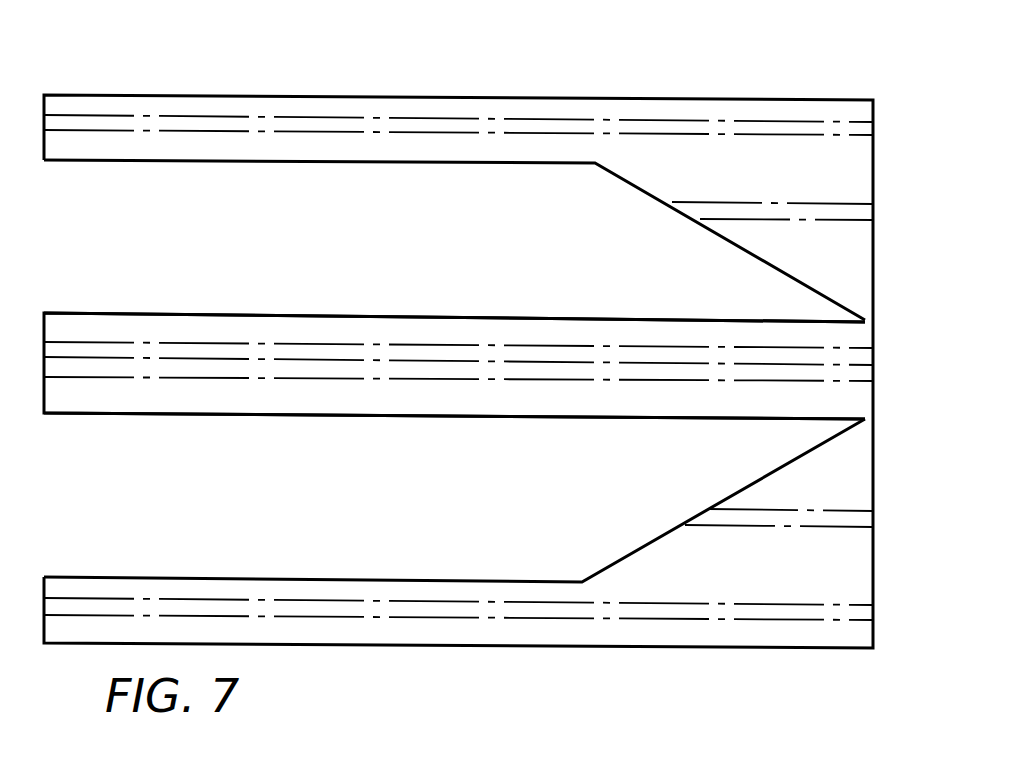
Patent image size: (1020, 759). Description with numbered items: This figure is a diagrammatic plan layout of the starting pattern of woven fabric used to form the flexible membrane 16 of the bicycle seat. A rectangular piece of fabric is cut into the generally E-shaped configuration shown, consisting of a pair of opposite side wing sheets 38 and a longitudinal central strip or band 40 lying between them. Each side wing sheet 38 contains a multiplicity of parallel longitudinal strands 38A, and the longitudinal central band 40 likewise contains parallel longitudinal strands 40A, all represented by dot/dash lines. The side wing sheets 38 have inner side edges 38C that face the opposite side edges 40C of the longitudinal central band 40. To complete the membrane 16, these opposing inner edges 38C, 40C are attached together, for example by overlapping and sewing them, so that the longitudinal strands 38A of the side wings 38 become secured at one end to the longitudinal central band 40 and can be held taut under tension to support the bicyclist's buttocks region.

The flexible membrane 16 is at (642, 52).
The side wing sheet 38 is at (738, 164).
The longitudinal strands 38A is at (388, 118).
The inner side edge 38C is at (445, 163).
The longitudinal central band 40 is at (632, 412).
The longitudinal strands 40A is at (553, 383).
The side edges 40C is at (273, 314).